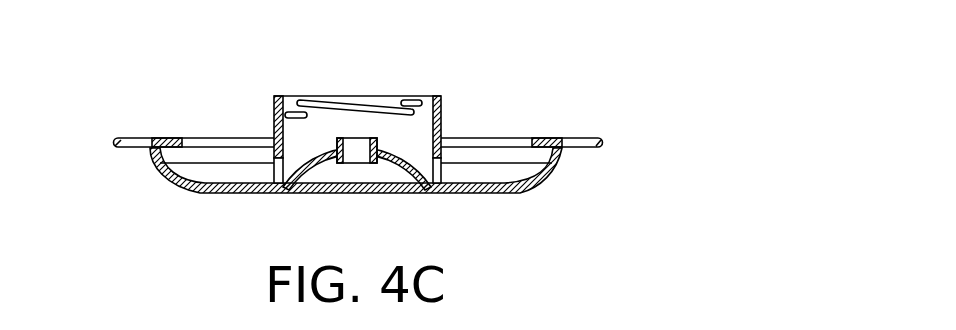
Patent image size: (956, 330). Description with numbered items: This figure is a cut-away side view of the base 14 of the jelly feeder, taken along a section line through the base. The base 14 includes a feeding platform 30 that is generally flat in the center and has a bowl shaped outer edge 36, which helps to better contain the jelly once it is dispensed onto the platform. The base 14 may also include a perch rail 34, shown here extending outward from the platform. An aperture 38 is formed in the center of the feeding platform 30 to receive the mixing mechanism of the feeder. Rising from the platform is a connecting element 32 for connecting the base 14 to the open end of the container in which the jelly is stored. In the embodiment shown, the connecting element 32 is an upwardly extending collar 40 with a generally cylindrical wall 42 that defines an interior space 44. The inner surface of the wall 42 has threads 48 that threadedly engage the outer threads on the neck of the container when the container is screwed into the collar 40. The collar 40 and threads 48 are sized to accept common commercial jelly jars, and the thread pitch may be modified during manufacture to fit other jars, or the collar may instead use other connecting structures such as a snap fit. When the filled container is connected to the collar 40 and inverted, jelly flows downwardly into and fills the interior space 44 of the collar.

The base 14 is at (608, 78).
The feeding platform 30 is at (493, 170).
The connecting element 32 is at (316, 76).
The perch rail 34 is at (583, 147).
The bowl shaped outer edge 36 is at (150, 152).
The aperture 38 is at (358, 152).
The collar 40 is at (441, 113).
The cylindrical wall 42 is at (284, 128).
The interior space 44 is at (361, 116).
The threads 48 is at (385, 105).